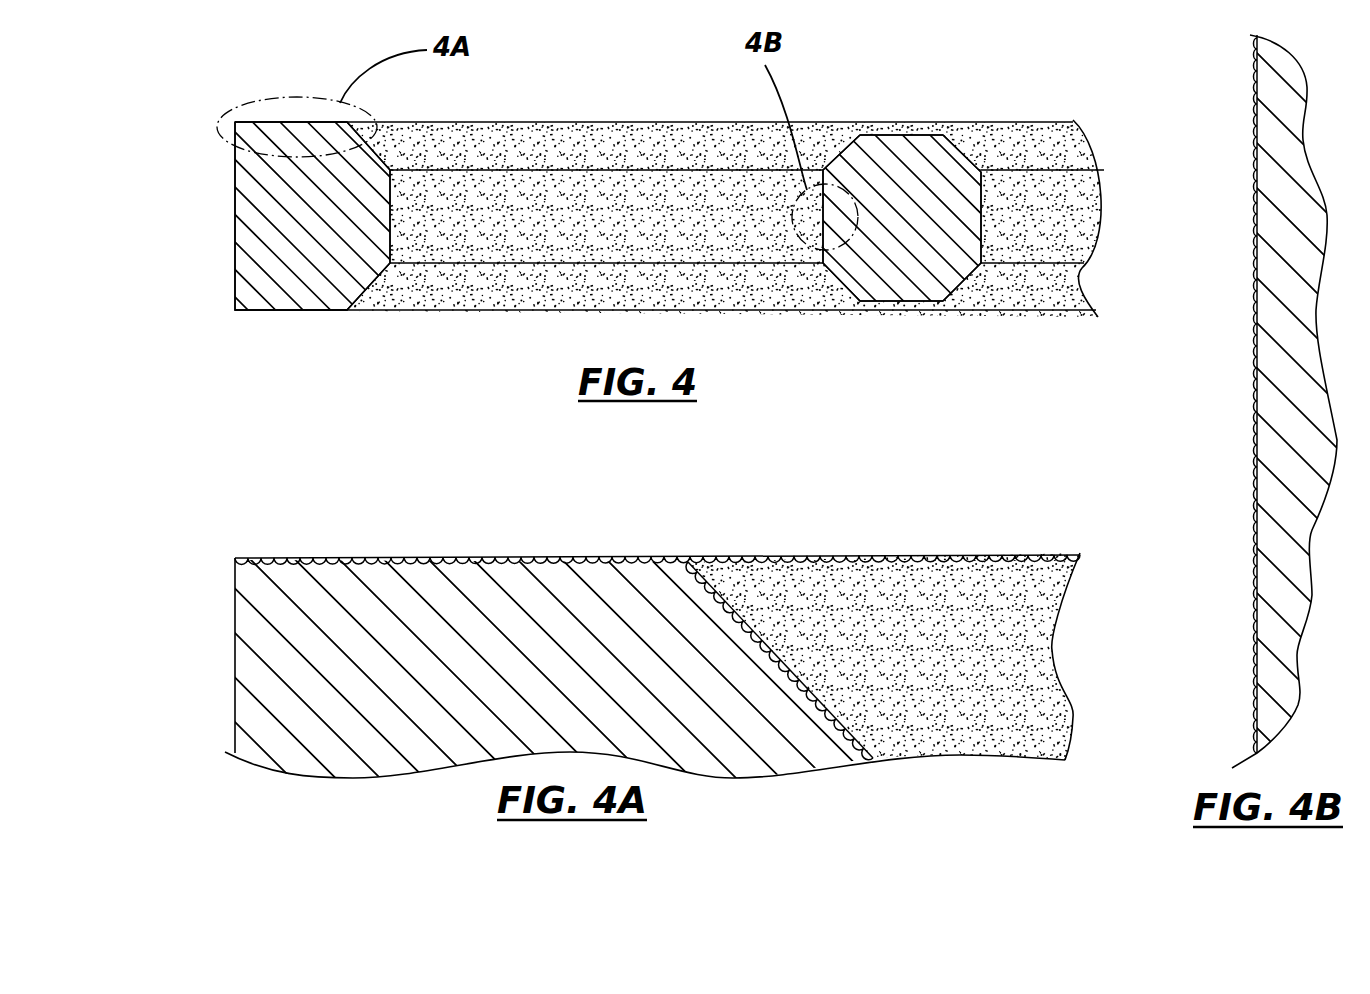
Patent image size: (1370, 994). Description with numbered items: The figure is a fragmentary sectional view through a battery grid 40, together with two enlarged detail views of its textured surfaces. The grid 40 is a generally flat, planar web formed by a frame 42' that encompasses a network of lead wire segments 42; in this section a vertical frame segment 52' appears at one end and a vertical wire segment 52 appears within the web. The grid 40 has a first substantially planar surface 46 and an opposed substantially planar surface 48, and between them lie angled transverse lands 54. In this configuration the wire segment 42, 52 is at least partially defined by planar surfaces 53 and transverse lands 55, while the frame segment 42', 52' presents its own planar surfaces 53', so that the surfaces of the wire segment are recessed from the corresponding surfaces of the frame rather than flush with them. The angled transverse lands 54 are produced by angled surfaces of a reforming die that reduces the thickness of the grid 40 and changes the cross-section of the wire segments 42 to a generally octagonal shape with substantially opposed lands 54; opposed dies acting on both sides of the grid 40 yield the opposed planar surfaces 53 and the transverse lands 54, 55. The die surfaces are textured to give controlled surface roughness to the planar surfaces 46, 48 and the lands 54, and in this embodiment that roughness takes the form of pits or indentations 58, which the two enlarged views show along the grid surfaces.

In FIG. 4, the battery grid 40 is at (315, 350).
In FIG. 4, the lead wire segments 42 is at (902, 218).
In FIG. 4, the frame 42' is at (312, 216).
In FIG. 4, the first substantially planar surface 46 is at (700, 122).
In FIG. 4, the opposed substantially planar surface 48 is at (520, 313).
In FIG. 4, the vertical lead wire segments 52 is at (905, 220).
In FIG. 4, the vertical frame segments 52' is at (305, 215).
In FIG. 4, the planar surfaces 53 is at (909, 221).
In FIG. 4, the planar surfaces of frame segment 53' is at (290, 215).
In FIG. 4, the angled transverse lands 54 is at (377, 150).
In FIG. 4, the transverse lands 55 is at (632, 231).
In FIG. 4A, the pits or indentations 58 is at (512, 535).
In FIG. 4B, the pits or indentations 58 is at (1215, 438).